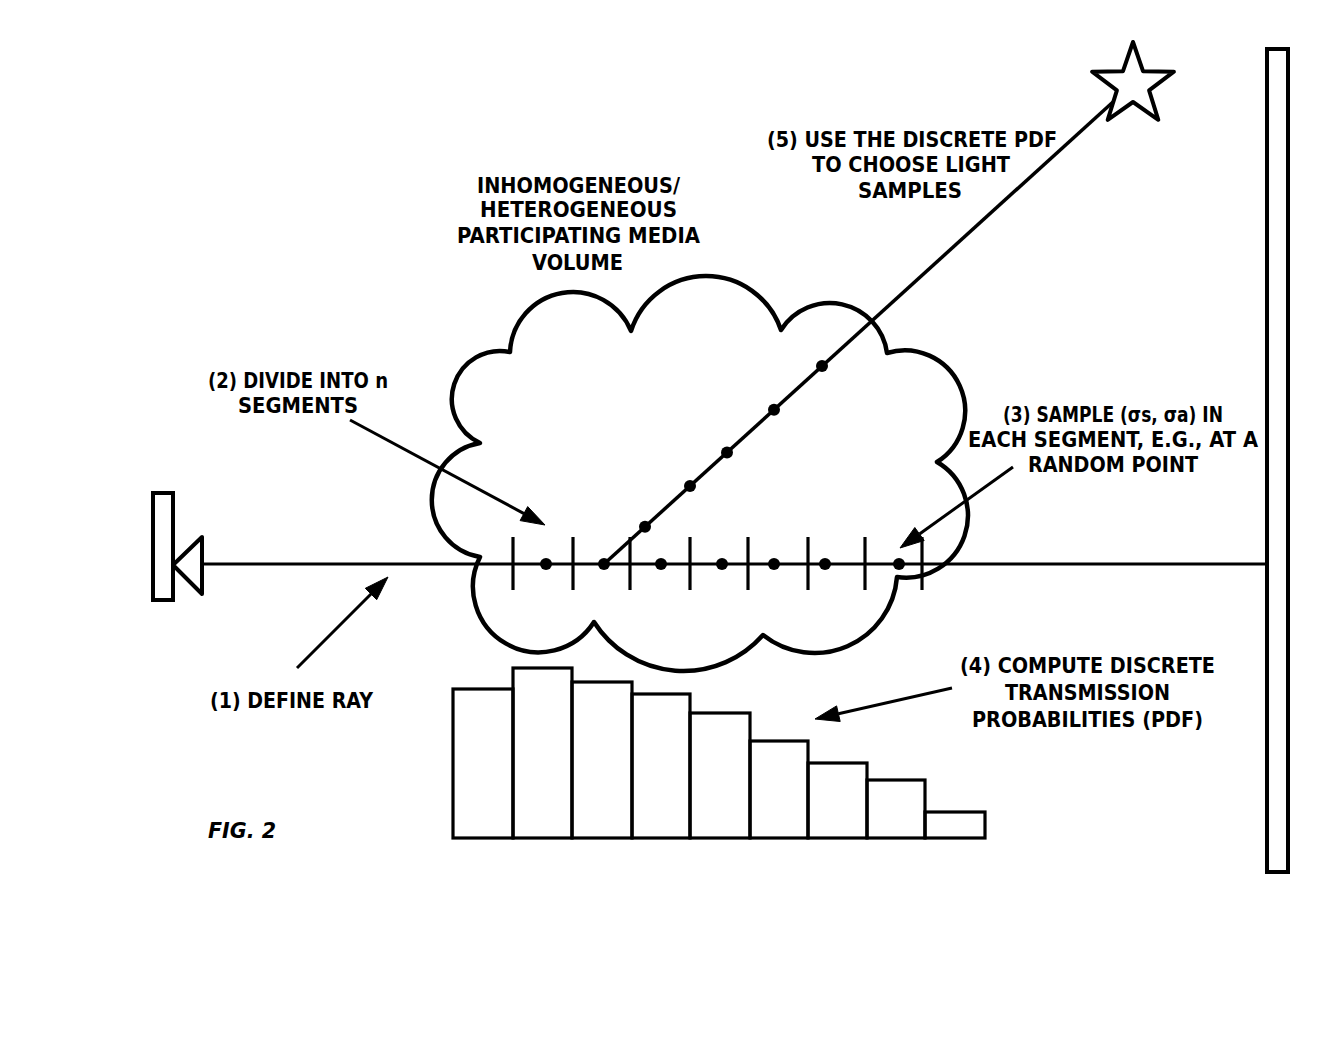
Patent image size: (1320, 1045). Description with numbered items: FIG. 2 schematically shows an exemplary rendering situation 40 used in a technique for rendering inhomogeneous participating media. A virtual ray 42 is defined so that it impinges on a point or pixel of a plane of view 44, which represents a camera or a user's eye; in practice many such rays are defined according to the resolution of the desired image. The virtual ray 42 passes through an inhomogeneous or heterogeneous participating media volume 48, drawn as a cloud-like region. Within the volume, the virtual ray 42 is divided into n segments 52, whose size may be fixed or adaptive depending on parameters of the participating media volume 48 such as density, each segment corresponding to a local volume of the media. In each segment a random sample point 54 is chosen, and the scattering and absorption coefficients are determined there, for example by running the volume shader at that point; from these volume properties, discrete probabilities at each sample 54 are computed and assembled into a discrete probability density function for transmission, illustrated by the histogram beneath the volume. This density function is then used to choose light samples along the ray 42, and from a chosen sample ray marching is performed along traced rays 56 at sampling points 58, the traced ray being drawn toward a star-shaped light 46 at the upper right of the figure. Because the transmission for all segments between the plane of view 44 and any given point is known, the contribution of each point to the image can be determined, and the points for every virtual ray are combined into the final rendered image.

The rendering situation 40 is at (355, 236).
The virtual ray 42 is at (247, 565).
The plane of view 44 is at (167, 493).
The light source 46 is at (1107, 68).
The participating media volume 48 is at (713, 278).
The segments 52 is at (728, 520).
The random sample point 54 is at (827, 552).
The traced rays 56 is at (917, 277).
The sampling points 58 is at (772, 400).